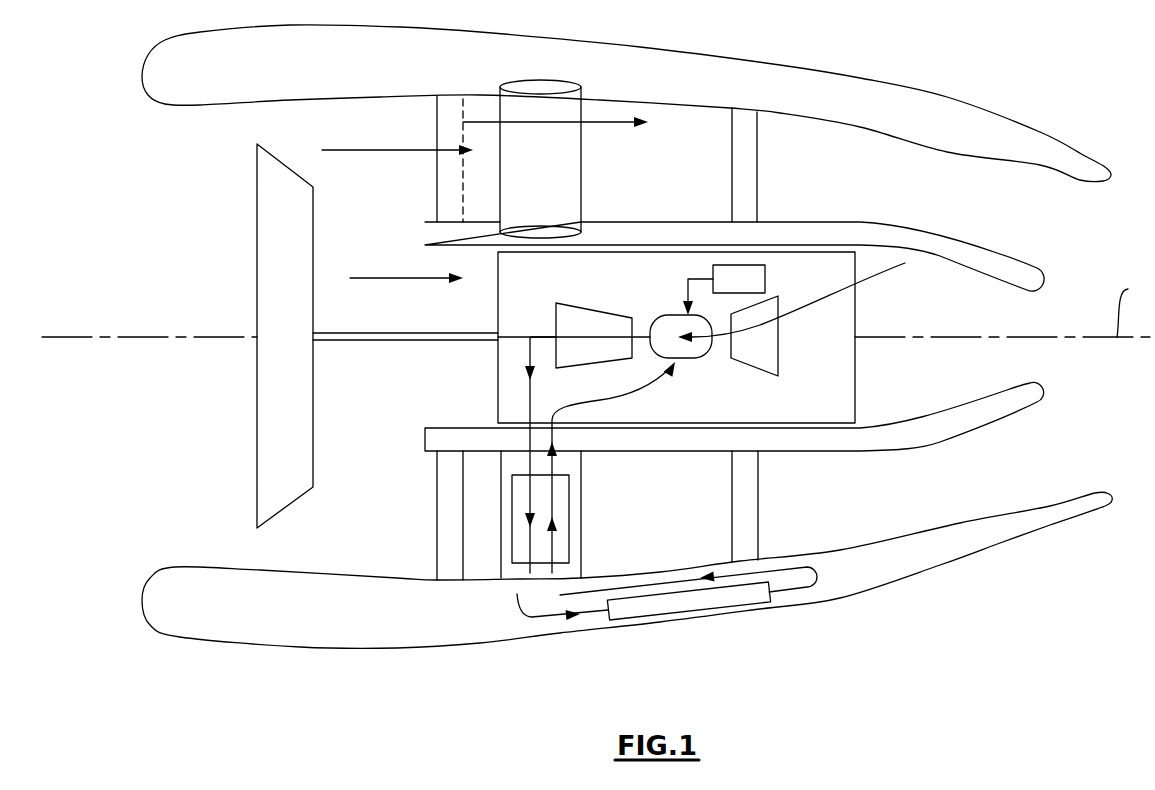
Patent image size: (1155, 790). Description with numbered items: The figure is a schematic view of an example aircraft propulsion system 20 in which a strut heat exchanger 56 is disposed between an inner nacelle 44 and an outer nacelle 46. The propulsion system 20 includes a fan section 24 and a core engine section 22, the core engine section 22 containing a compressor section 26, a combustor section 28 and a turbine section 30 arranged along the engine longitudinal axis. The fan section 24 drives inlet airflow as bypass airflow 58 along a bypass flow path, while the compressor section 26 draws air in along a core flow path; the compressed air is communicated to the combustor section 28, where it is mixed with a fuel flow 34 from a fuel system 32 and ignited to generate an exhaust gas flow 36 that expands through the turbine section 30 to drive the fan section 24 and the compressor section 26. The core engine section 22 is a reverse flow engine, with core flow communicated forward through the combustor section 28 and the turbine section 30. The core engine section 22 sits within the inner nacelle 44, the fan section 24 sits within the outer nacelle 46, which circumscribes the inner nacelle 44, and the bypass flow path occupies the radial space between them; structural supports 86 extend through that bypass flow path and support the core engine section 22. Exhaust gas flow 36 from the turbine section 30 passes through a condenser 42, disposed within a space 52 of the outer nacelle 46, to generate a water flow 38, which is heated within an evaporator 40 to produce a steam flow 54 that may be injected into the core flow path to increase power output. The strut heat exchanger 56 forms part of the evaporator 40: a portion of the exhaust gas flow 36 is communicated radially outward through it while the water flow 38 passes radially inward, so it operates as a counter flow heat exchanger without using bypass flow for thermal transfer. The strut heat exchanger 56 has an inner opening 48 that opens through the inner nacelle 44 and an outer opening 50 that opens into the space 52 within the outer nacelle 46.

The propulsion system 20 is at (990, 80).
The core engine section 22 is at (805, 262).
The fan section 24 is at (266, 400).
The compressor section 26 is at (776, 361).
The combustor section 28 is at (688, 360).
The turbine section 30 is at (590, 318).
The fuel system 32 is at (766, 279).
The fuel flow 34 is at (686, 293).
The exhaust gas flow 36 is at (528, 396).
The water flow 38 is at (565, 572).
The evaporator 40 is at (524, 535).
The condenser 42 is at (688, 604).
The inner nacelle 44 is at (665, 233).
The outer nacelle 46 is at (702, 76).
The inner opening 48 is at (598, 232).
The outer opening 50 is at (564, 70).
The space 52 is at (393, 618).
The steam flow 54 is at (620, 398).
The strut heat exchanger 56 is at (488, 188).
The bypass airflow 58 is at (481, 118).
The structural supports 86 is at (444, 170).